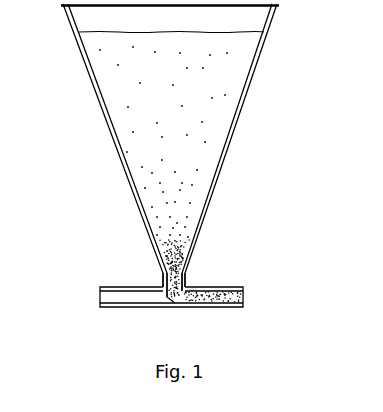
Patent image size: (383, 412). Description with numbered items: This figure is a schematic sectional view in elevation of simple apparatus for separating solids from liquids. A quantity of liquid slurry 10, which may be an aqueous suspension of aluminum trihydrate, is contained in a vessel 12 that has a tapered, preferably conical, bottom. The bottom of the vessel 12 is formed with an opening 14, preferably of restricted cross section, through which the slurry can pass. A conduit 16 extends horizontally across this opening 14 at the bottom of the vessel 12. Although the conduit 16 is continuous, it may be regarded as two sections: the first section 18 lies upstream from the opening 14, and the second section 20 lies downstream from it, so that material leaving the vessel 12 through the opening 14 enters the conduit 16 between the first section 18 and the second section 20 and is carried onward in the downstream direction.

The liquid slurry 10 is at (178, 150).
The vessel 12 is at (230, 145).
The opening 14 is at (182, 282).
The conduit 16 is at (178, 314).
The first section 18 is at (128, 308).
The second section 20 is at (230, 308).